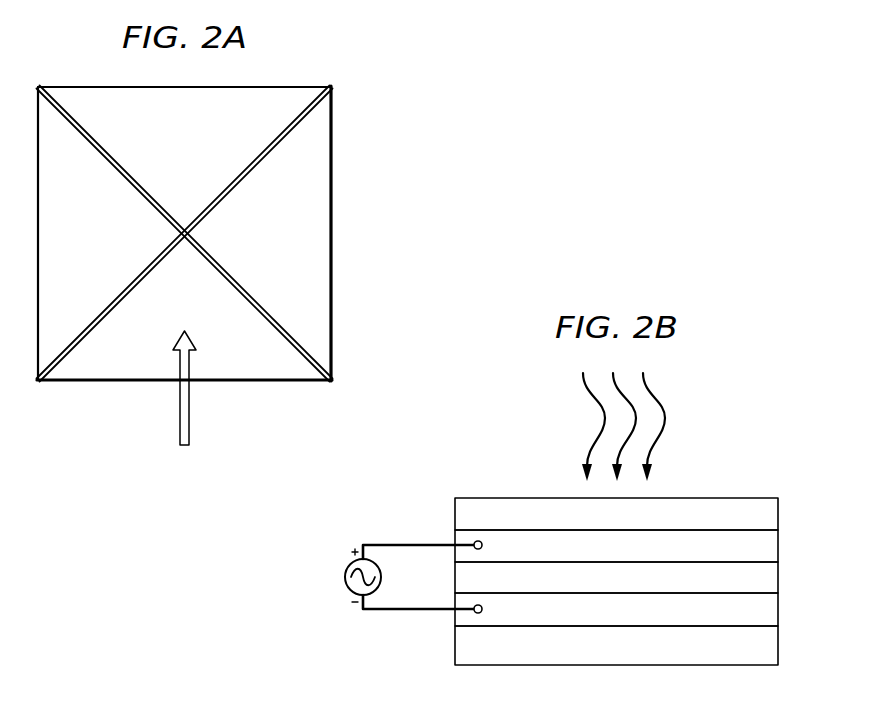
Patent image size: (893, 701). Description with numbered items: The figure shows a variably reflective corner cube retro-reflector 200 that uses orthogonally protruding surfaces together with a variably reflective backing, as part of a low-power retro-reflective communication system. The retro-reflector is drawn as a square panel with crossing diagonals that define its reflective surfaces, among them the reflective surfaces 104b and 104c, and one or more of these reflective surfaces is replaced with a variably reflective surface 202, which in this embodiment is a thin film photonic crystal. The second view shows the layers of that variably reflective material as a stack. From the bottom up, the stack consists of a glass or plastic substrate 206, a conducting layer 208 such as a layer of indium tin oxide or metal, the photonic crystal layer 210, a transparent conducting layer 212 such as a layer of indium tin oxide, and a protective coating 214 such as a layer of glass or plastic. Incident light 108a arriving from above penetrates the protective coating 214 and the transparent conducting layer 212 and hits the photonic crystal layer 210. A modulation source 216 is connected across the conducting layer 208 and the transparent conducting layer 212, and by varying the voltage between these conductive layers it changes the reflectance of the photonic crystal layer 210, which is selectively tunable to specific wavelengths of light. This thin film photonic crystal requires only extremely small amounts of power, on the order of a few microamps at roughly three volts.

In FIG. 2A, the variably reflective corner cube retro-reflector 200 is at (388, 152).
In FIG. 2A, the reflective surface 104b is at (280, 338).
In FIG. 2A, the reflective surface 104c is at (88, 335).
In FIG. 2A, the variably reflective surface 202 is at (213, 368).
In FIG. 2B, the incident light 108a is at (665, 418).
In FIG. 2B, the protective coating 214 is at (770, 514).
In FIG. 2B, the transparent conducting layer 212 is at (770, 546).
In FIG. 2B, the photonic crystal layer 210 is at (770, 578).
In FIG. 2B, the conducting layer 208 is at (770, 609).
In FIG. 2B, the substrate 206 is at (770, 645).
In FIG. 2B, the modulation source 216 is at (345, 578).